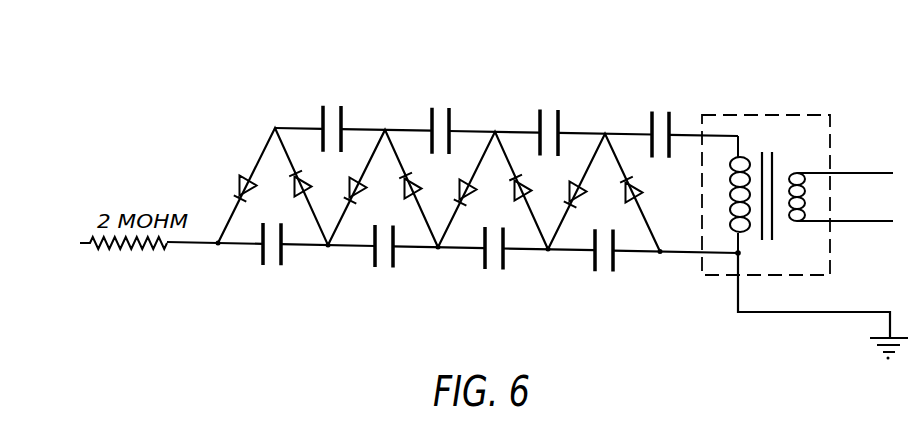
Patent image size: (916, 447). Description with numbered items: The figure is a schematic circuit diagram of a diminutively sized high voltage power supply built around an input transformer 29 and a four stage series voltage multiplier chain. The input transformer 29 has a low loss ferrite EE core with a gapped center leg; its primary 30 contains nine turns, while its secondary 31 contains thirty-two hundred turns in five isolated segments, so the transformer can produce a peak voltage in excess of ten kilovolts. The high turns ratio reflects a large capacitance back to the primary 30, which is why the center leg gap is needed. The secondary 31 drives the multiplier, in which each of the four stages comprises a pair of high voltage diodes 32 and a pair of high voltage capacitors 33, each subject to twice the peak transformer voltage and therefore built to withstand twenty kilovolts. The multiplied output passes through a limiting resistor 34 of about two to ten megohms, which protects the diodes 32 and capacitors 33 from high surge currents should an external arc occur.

The input transformer 29 is at (793, 115).
The primary 30 is at (799, 172).
The secondary 31 is at (747, 153).
The high voltage diodes 32 is at (632, 197).
The high voltage capacitors 33 is at (660, 159).
The limiting resistor 34 is at (130, 250).